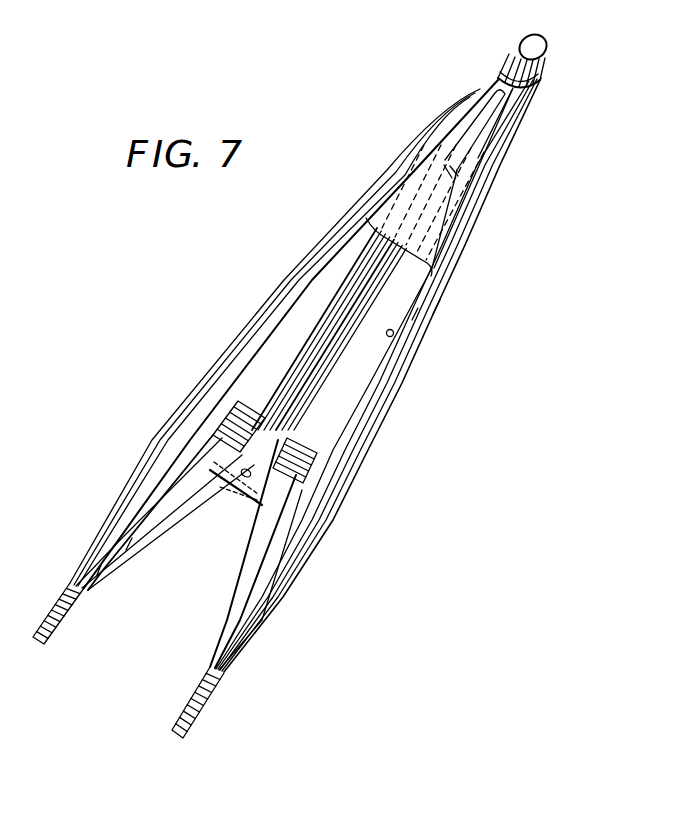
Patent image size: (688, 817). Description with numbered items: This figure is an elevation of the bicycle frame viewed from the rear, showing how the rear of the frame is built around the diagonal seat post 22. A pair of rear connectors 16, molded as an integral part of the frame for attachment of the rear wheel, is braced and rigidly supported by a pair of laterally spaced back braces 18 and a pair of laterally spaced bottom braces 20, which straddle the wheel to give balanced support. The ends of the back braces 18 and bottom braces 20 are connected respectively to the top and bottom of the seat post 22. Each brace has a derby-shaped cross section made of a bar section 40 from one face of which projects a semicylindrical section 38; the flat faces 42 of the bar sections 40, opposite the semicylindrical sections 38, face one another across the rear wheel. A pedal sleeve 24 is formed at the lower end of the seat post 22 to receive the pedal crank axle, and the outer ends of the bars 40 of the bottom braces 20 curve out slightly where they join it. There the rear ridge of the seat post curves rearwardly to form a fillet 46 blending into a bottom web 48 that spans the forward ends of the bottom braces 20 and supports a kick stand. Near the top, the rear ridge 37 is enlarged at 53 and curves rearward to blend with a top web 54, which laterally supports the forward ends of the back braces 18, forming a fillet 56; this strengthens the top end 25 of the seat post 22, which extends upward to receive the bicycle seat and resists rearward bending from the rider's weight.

The rear connector 16 is at (100, 537).
The back brace 18 is at (262, 301).
The bottom brace 20 is at (161, 512).
The diagonal seat post 22 is at (350, 382).
The pedal sleeve 24 is at (253, 408).
The top end of the seat post 25 is at (523, 90).
The rear ridge 37 is at (323, 333).
The semicylindrical section 38 is at (435, 305).
The bar section 40 is at (413, 313).
The flat face 42 is at (393, 335).
The fillet 46 is at (268, 505).
The bottom web 48 is at (217, 473).
The enlargement of the rear ridge 53 is at (490, 117).
The top web 54 is at (447, 200).
The fillet 56 is at (456, 176).